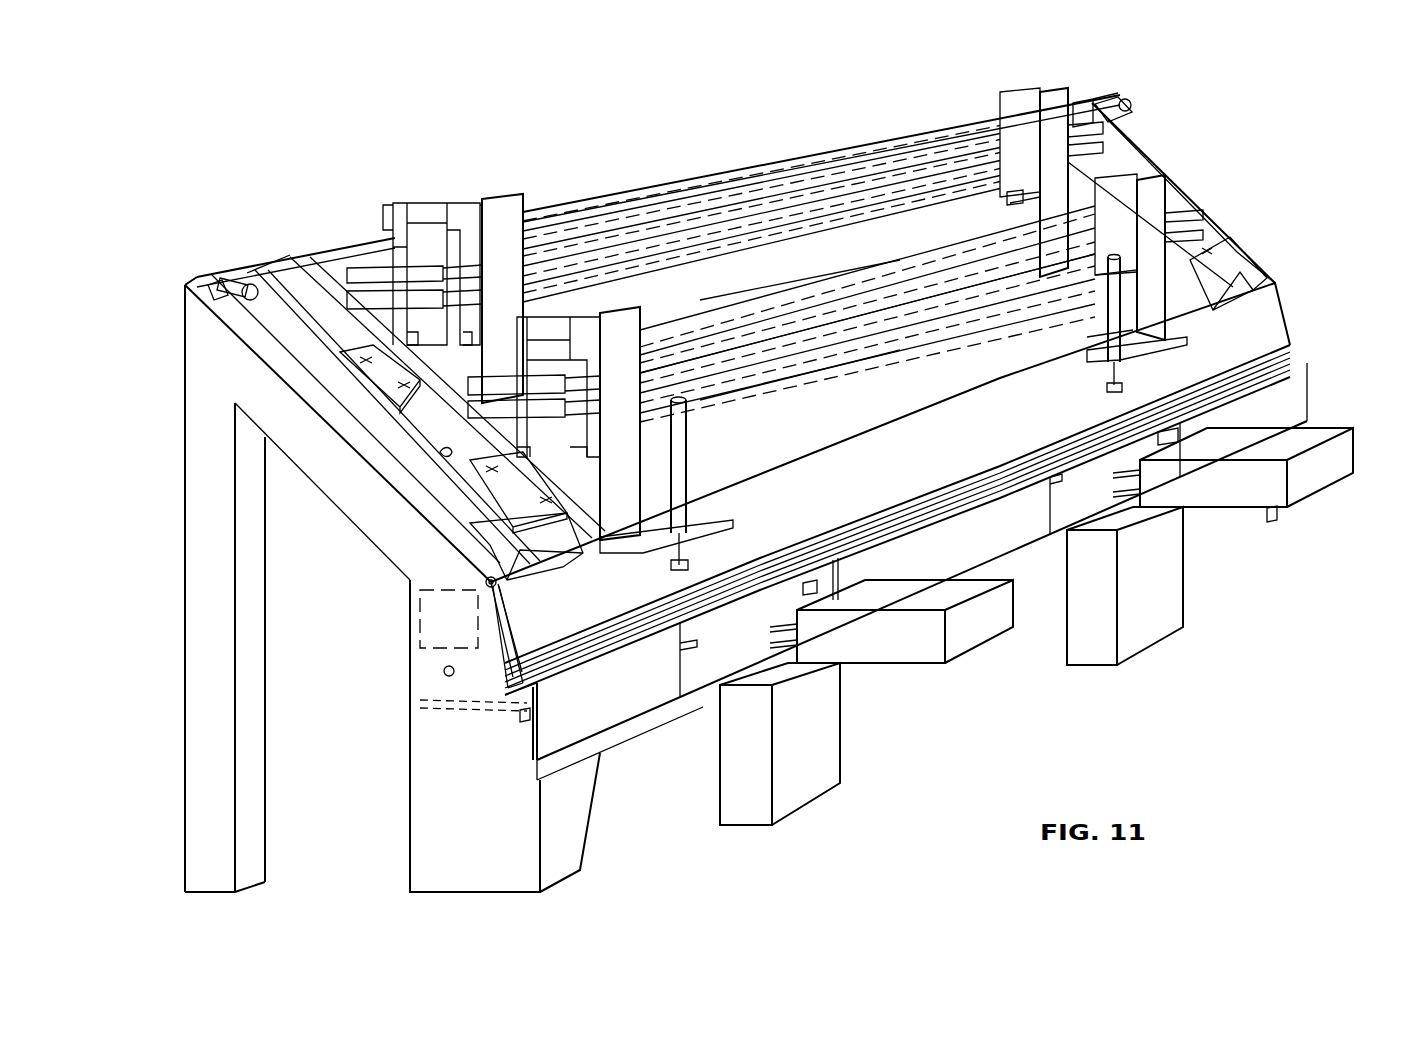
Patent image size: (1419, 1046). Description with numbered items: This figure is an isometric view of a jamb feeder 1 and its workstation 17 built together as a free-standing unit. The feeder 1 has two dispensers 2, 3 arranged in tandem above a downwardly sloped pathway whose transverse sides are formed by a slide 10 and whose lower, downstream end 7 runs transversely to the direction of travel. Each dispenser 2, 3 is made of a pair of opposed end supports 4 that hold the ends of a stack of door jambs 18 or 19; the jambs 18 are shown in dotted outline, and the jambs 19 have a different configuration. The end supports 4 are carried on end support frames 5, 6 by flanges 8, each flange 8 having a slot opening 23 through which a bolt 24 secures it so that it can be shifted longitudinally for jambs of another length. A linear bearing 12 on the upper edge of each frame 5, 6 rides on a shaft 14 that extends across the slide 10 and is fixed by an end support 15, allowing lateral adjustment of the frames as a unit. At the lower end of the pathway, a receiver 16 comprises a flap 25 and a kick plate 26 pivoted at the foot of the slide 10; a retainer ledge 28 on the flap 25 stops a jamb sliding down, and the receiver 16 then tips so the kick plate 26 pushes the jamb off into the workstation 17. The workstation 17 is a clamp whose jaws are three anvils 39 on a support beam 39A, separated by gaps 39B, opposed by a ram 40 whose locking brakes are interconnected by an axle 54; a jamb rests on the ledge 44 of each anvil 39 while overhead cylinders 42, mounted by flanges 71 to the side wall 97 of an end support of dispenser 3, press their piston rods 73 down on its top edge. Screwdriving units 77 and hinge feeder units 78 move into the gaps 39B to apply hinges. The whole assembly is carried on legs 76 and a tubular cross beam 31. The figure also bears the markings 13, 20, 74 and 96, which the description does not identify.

The feeder 1 is at (513, 142).
The dispenser 2 is at (1185, 185).
The dispenser 3 is at (1113, 83).
The end support 4 is at (460, 193).
The end support frame 5 is at (328, 318).
The end support frame 6 is at (1240, 262).
The downstream end 7 is at (1022, 355).
The flange 8 is at (1205, 218).
The slide 10 is at (857, 418).
The linear bearing 12 is at (276, 276).
The section line 13 is at (700, 590).
The shaft 14 is at (300, 268).
The end support 15 is at (210, 285).
The receiver 16 is at (1292, 307).
The workstation 17 is at (1317, 379).
The door jambs 18 is at (862, 205).
The door jambs 19 is at (810, 380).
The support strip 20 is at (867, 313).
The slot opening 23 is at (405, 367).
The bolt 24 is at (395, 380).
The flap 25 is at (505, 642).
The kick plate 26 is at (868, 492).
The retainer ledge 28 is at (564, 652).
The tubular cross beam 31 is at (434, 581).
The anvils 39 is at (626, 708).
The support beam 39A is at (660, 715).
The gaps 39B is at (750, 652).
The ram 40 is at (466, 710).
The overhead cylinders 42 is at (688, 440).
The ledge 44 is at (524, 718).
The axle 54 is at (447, 677).
The flanges 71 is at (700, 517).
The piston rods 73 is at (672, 565).
The center leg 74 is at (620, 813).
The legs 76 is at (411, 779).
The screwdriving units 77 is at (898, 652).
The hinge feeder units 78 is at (1158, 592).
The backing plate 96 is at (596, 500).
The side wall 97 is at (518, 280).